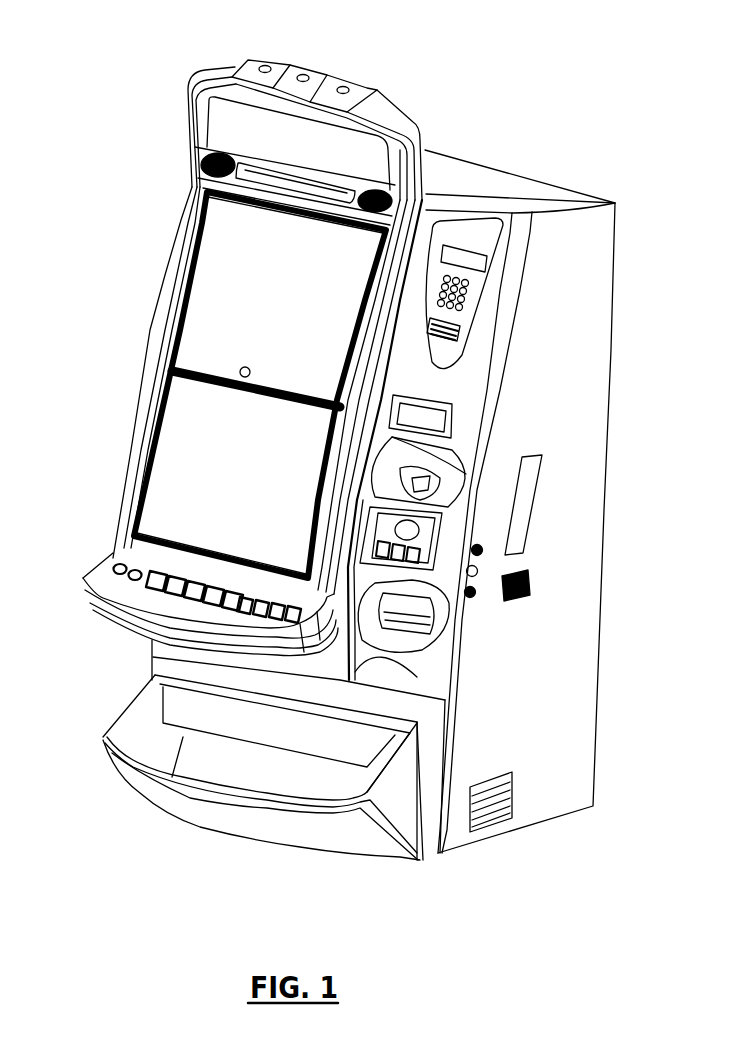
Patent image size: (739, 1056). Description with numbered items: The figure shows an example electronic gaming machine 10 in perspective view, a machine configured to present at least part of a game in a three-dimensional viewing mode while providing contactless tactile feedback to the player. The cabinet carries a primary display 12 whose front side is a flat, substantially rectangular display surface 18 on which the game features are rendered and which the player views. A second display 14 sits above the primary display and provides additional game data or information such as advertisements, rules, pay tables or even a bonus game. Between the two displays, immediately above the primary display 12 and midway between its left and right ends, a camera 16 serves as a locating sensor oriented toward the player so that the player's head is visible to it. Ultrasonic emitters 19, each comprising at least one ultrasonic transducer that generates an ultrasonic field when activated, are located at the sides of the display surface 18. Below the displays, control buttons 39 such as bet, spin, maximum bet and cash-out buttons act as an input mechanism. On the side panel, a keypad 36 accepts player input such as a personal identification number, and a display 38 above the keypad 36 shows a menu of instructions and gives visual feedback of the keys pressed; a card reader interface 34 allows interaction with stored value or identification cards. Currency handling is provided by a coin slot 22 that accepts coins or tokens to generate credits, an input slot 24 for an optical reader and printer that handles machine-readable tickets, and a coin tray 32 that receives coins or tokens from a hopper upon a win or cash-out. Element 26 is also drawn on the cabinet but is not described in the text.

The electronic gaming machine 10 is at (549, 105).
The primary display 12 is at (170, 473).
The second display 14 is at (215, 268).
The camera 16 is at (230, 362).
The display surface 18 is at (178, 430).
The ultrasonic emitter 19 is at (150, 372).
The coin slot 22 is at (450, 467).
The input slot 24 is at (448, 408).
The handle / cup holder 26 is at (443, 633).
The coin tray 32 is at (150, 735).
The card reader interface 34 is at (467, 337).
The keypad 36 is at (462, 301).
The display 38 is at (475, 266).
The control buttons 39 is at (110, 580).